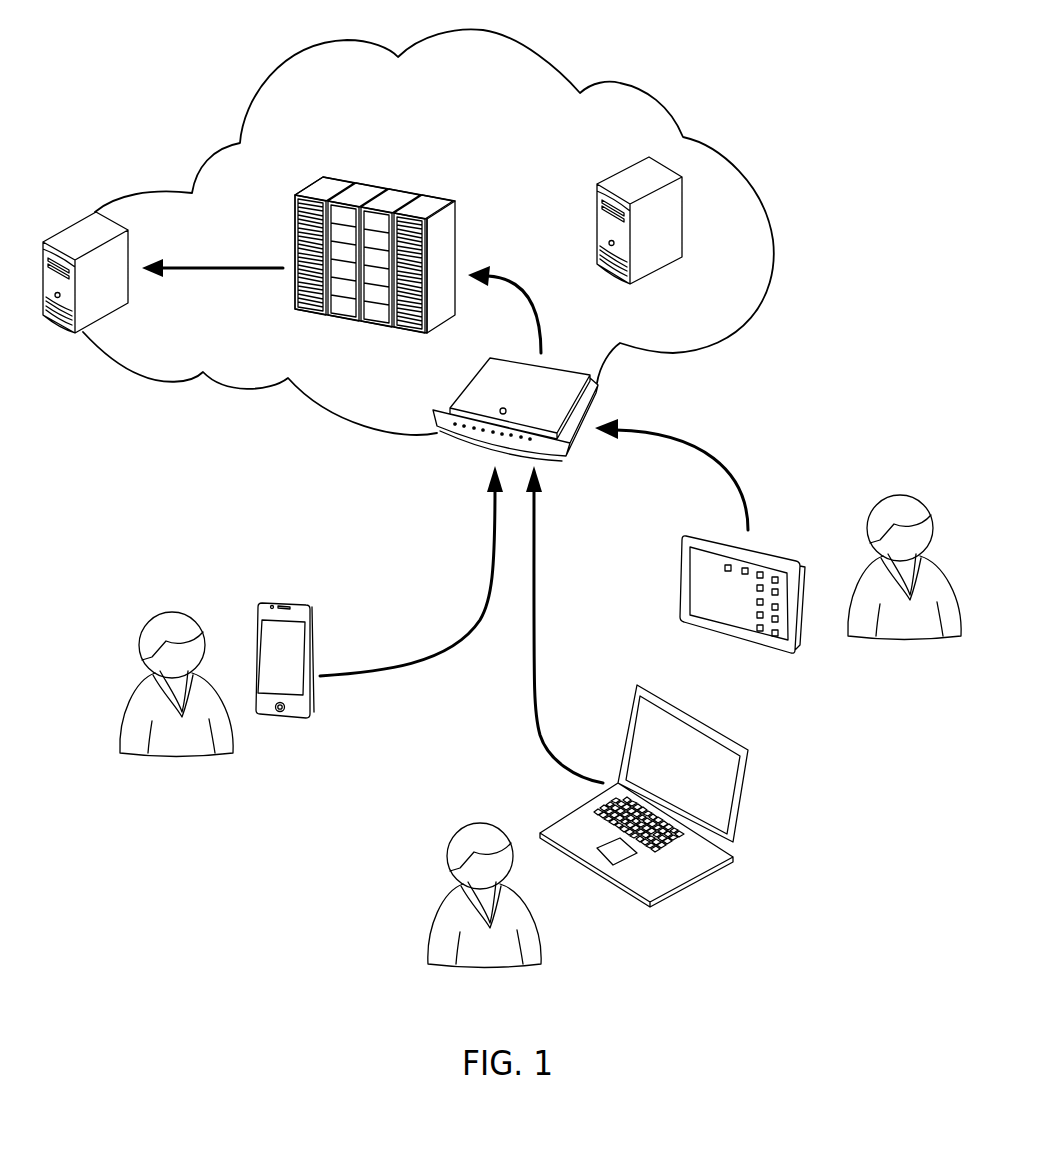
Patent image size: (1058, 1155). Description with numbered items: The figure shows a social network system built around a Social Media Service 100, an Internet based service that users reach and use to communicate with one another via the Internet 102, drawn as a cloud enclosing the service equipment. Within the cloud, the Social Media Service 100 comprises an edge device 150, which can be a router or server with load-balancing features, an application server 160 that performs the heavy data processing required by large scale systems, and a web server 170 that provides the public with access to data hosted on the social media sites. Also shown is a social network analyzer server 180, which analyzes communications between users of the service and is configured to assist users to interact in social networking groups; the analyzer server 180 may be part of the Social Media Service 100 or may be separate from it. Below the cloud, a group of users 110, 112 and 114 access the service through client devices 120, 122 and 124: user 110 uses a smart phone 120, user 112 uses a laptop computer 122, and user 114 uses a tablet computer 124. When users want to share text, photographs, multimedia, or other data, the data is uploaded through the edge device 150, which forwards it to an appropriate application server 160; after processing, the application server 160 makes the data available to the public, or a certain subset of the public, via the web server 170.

The social media service 100 is at (519, 136).
The Internet 102 is at (296, 56).
The user 110 is at (146, 626).
The user 112 is at (458, 833).
The user 114 is at (877, 508).
The smart phone 120 is at (303, 717).
The laptop computer 122 is at (690, 880).
The tablet computer 124 is at (797, 648).
The edge device 150 is at (443, 397).
The application server 160 is at (333, 317).
The web server 170 is at (107, 318).
The social network analyzer server 180 is at (657, 263).